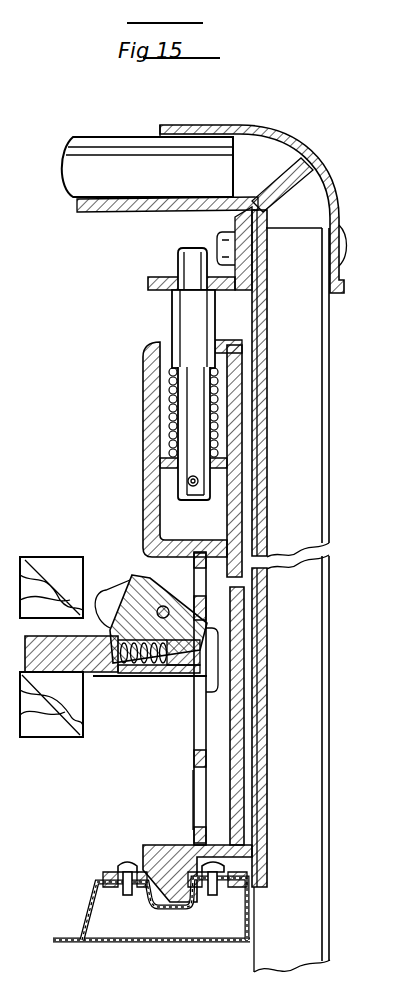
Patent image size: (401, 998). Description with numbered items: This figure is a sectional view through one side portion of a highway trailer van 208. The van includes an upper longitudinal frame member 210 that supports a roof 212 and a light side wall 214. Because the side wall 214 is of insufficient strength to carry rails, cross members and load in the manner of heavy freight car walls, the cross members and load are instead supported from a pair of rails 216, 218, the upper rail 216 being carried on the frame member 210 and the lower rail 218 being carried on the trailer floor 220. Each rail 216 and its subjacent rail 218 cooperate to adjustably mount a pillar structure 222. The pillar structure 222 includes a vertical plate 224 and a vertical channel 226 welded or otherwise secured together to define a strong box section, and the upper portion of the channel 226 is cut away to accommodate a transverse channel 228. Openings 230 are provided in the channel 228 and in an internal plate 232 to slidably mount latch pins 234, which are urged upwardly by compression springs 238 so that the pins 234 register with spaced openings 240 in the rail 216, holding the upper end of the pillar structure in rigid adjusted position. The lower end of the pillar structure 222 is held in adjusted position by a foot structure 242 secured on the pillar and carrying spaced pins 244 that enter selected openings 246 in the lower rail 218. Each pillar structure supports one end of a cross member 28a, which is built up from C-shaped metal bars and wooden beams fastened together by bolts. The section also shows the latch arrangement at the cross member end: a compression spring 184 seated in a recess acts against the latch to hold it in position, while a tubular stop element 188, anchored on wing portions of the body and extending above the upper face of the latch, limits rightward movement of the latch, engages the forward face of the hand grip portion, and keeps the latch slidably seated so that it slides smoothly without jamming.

The highway trailer van 208 is at (332, 732).
The upper longitudinal frame member 210 is at (323, 174).
The roof 212 is at (103, 160).
The light side wall 214 is at (268, 490).
The rail 216 is at (160, 283).
The rail 218 is at (100, 883).
The trailer floor 220 is at (127, 933).
The pillar structure 222 is at (193, 803).
The vertical plate 224 is at (237, 783).
The vertical channel 226 is at (193, 762).
The transverse channel 228 is at (150, 522).
The openings 230 is at (185, 346).
The internal plate 232 is at (165, 462).
The latch pins 234 is at (192, 410).
The compression springs 238 is at (168, 396).
The openings 240 is at (178, 262).
The foot structure 242 is at (147, 860).
The pins 244 is at (168, 908).
The openings 246 is at (190, 898).
The compression spring 184 is at (120, 680).
The tubular stop element 188 is at (163, 606).
The cross member 28a is at (86, 720).